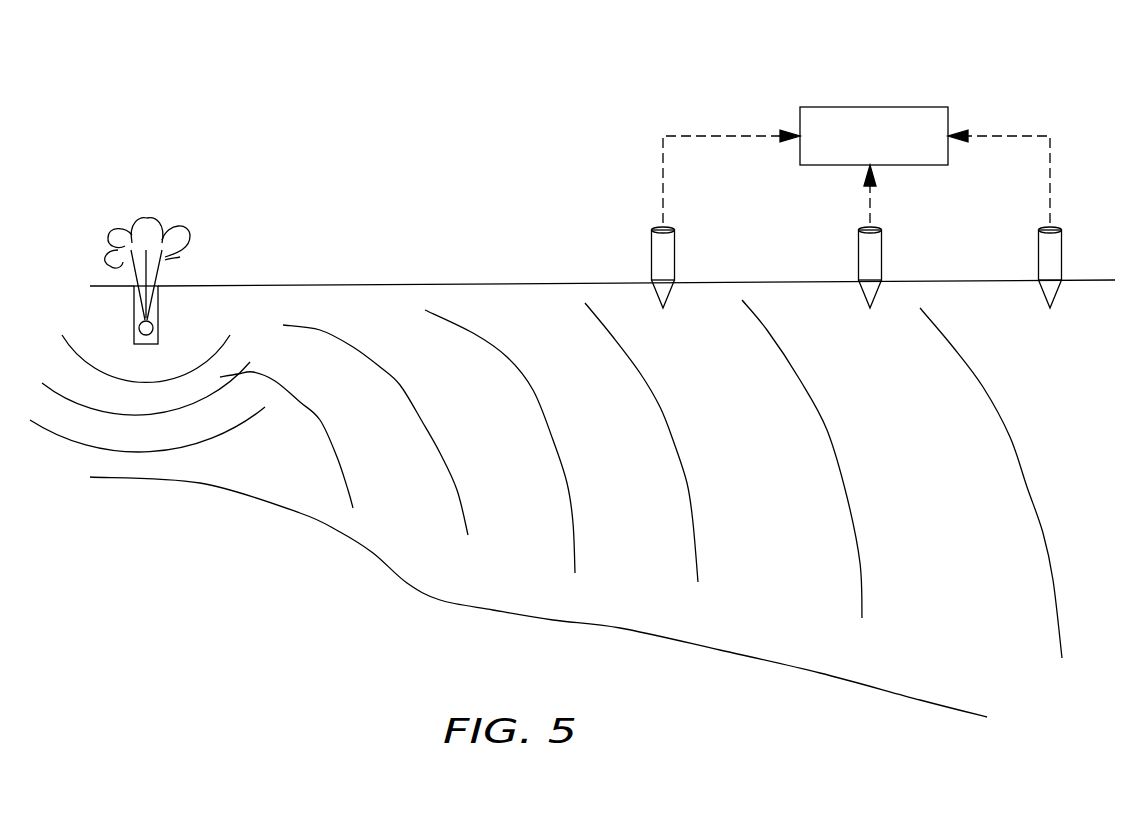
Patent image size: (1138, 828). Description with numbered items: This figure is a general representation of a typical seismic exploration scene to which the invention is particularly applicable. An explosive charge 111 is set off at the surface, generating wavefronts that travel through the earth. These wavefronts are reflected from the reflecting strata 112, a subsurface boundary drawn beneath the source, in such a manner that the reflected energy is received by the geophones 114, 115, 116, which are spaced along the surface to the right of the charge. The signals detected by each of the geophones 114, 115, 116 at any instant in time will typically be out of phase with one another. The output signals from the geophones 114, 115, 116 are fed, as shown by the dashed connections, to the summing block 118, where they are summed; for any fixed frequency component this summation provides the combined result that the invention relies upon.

The explosive charge 111 is at (118, 276).
The reflecting strata 112 is at (222, 493).
The geophone 114 is at (675, 230).
The geophone 115 is at (882, 230).
The geophone 116 is at (1062, 230).
The summing block 118 is at (868, 107).